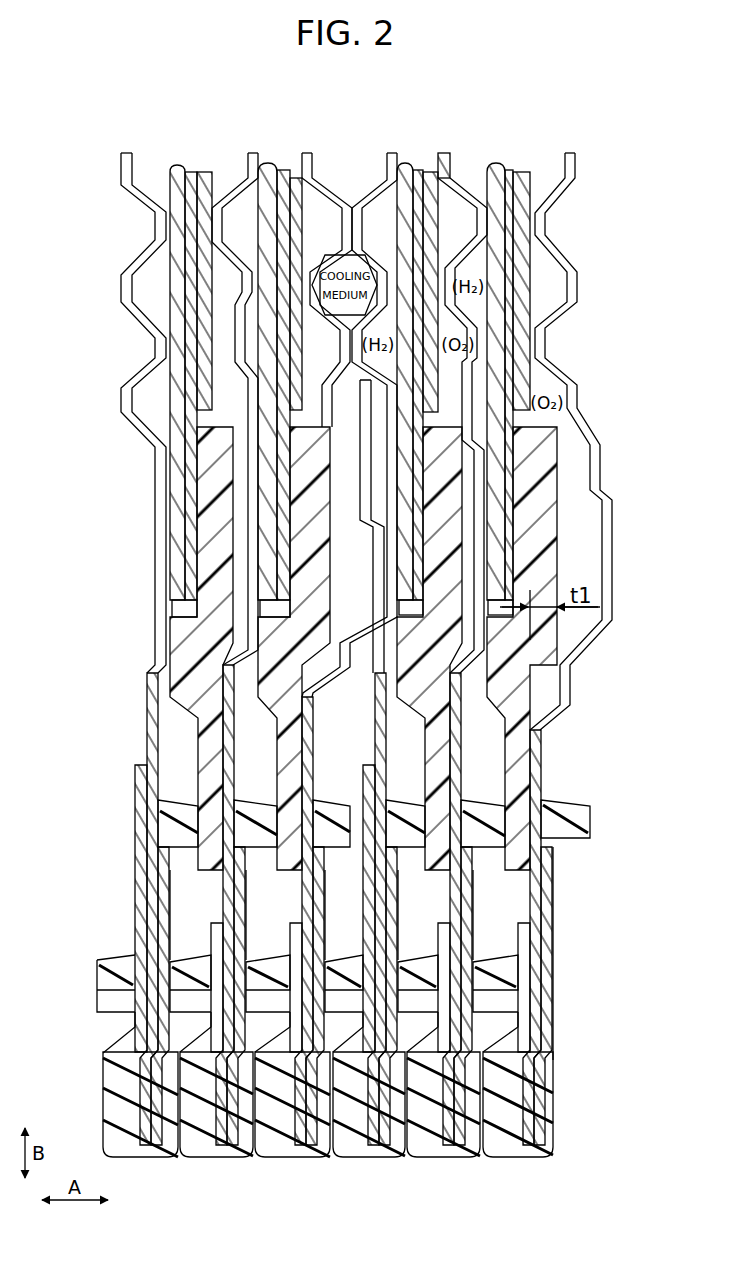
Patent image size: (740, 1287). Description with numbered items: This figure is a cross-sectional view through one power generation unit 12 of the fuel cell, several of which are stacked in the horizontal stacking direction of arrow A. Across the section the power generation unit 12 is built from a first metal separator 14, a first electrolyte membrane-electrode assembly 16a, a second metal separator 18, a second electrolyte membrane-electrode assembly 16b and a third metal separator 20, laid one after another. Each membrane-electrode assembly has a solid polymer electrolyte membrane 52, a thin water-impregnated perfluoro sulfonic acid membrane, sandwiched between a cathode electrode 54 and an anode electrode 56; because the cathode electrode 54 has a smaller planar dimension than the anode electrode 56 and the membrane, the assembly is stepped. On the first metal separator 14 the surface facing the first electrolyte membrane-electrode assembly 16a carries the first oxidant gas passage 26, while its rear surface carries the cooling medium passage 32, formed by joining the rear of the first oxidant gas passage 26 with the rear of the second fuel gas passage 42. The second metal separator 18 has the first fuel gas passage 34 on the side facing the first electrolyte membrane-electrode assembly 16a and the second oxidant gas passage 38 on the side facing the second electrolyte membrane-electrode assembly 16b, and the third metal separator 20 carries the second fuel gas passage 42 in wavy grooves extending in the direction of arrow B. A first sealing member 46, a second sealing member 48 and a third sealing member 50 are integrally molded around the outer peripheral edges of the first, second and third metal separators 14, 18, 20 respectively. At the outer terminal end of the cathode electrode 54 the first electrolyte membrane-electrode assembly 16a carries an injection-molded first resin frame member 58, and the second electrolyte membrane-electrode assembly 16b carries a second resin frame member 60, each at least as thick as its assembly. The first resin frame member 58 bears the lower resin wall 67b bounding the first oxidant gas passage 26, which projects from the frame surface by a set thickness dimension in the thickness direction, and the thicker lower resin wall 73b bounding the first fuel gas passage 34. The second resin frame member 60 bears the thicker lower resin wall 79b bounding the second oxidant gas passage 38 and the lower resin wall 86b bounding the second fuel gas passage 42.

The power generation unit 12 is at (347, 90).
The first metal separator 14 is at (572, 150).
The first electrolyte membrane-electrode assembly 16a is at (505, 168).
The second electrolyte membrane-electrode assembly 16b is at (411, 163).
The second metal separator 18 is at (455, 178).
The third metal separator 20 is at (390, 150).
The first oxidant gas passage 26 is at (542, 383).
The cooling medium passage 32 is at (345, 280).
The first fuel gas passage 34 is at (478, 262).
The second oxidant gas passage 38 is at (452, 362).
The second fuel gas passage 42 is at (370, 298).
The first sealing member 46 is at (508, 1150).
The second sealing member 48 is at (427, 1150).
The third sealing member 50 is at (370, 1150).
The solid polymer electrolyte membrane 52 is at (540, 337).
The cathode electrode 54 is at (523, 303).
The anode electrode 56 is at (505, 352).
The first resin frame member 58 is at (552, 528).
The second resin frame member 60 is at (450, 467).
The resin wall 67b is at (550, 561).
The resin wall 73b is at (497, 663).
The resin wall 79b is at (453, 625).
The resin wall 86b is at (410, 680).